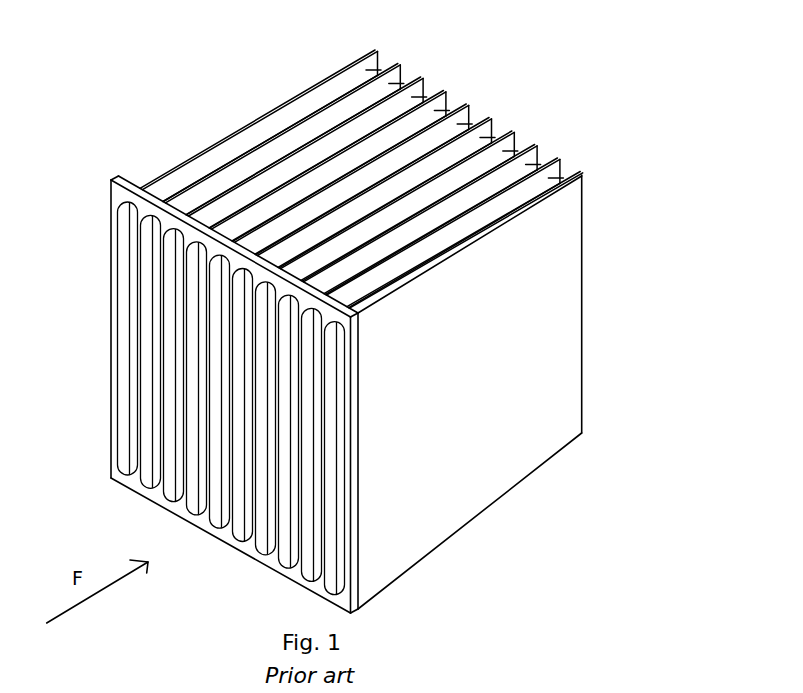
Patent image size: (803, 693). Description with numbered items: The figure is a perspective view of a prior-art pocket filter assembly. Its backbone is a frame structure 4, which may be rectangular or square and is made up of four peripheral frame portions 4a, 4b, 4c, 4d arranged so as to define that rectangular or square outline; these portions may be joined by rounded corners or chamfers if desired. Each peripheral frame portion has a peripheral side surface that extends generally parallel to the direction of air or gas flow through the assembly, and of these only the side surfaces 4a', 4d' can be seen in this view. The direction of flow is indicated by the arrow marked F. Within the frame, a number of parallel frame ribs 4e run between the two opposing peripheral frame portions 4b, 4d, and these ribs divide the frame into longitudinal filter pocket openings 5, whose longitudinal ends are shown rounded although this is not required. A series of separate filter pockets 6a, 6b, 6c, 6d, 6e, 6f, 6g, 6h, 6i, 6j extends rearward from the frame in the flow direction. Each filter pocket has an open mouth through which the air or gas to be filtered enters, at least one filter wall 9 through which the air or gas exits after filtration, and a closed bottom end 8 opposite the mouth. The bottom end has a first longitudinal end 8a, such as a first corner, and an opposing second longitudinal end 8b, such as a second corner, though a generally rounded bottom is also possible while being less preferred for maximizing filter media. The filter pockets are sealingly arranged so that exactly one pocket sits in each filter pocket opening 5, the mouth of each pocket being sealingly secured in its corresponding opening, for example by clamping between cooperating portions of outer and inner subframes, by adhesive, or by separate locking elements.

The frame structure 4 is at (243, 372).
The peripheral frame portion 4a is at (394, 463).
The peripheral side surface 4a' is at (394, 463).
The peripheral frame portion 4b is at (248, 555).
The peripheral frame portion 4c is at (112, 262).
The peripheral frame portion 4d is at (203, 219).
The peripheral side surface 4d' is at (234, 219).
The frame ribs 4e is at (137, 308).
The filter pocket openings 5 is at (135, 393).
The filter pocket 6a is at (563, 210).
The filter pocket 6b is at (564, 175).
The filter pocket 6c is at (541, 160).
The filter pocket 6d is at (519, 147).
The filter pocket 6e is at (496, 134).
The filter pocket 6f is at (473, 121).
The filter pocket 6g is at (450, 107).
The filter pocket 6h is at (427, 93).
The filter pocket 6i is at (404, 80).
The filter pocket 6j is at (381, 64).
The closed bottom end 8 is at (502, 374).
The first longitudinal end 8a is at (583, 178).
The second longitudinal end 8b is at (582, 433).
The filter wall 9 is at (213, 150).